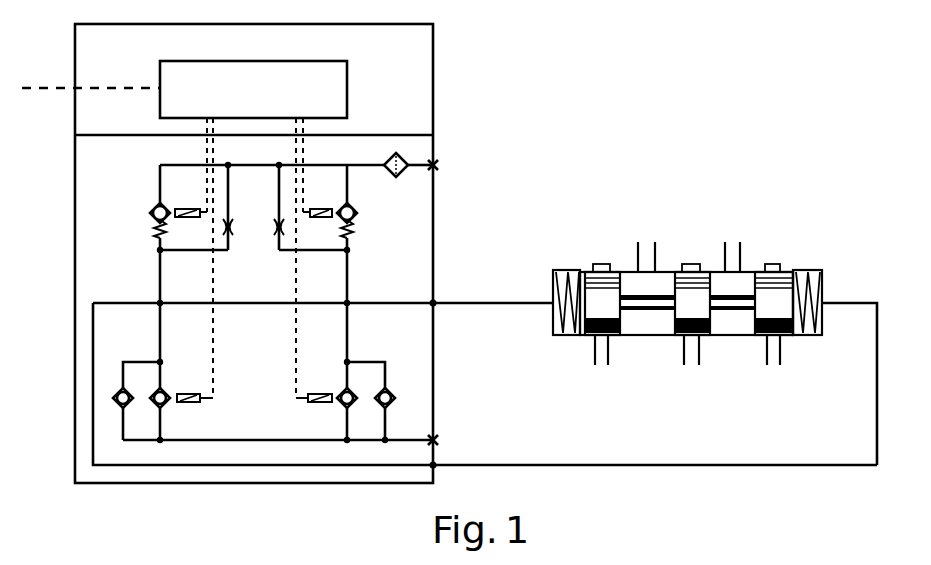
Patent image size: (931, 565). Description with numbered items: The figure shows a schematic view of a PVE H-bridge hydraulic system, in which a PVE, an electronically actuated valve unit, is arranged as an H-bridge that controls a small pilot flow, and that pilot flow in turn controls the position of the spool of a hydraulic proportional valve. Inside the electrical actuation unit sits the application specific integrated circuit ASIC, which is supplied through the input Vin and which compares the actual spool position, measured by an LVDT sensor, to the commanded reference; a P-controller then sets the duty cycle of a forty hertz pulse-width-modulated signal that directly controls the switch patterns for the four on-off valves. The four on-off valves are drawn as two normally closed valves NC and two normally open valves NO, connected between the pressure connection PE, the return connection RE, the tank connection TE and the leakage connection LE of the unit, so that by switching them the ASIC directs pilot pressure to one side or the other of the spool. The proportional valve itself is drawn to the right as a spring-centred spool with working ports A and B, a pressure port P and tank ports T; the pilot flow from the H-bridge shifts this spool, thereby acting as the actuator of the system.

The application specific integrated circuit ASIC is at (253, 89).
The input voltage supply Vin is at (90, 74).
The pressure port PE is at (319, 171).
The return / control port RE is at (485, 384).
The tank port TE is at (298, 440).
The leakage port LE is at (485, 399).
The normally closed solenoid valve NC is at (254, 234).
The normally open solenoid valve NO is at (254, 371).
The valve working port A is at (646, 244).
The valve working port B is at (733, 244).
The valve pressure port P is at (691, 364).
The valve tank port T is at (686, 364).